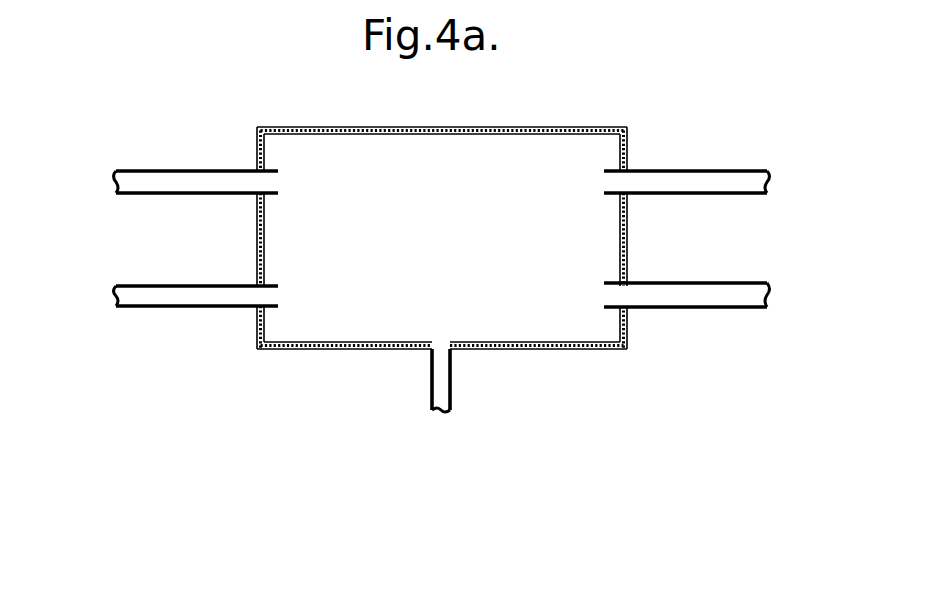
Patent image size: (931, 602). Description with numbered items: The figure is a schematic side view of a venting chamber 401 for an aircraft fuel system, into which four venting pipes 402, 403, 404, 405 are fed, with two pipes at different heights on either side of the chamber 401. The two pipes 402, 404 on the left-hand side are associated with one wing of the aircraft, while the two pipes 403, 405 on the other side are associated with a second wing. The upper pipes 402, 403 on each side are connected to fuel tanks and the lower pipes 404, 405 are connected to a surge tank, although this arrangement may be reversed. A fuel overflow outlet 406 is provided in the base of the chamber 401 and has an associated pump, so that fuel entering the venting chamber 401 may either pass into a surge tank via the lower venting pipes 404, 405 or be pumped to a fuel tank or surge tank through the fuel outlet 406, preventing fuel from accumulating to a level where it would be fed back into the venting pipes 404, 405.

The venting chamber 401 is at (300, 128).
The venting pipe 402 is at (166, 182).
The venting pipe 403 is at (727, 180).
The venting pipe 404 is at (176, 297).
The venting pipe 405 is at (723, 297).
The fuel overflow outlet 406 is at (442, 387).